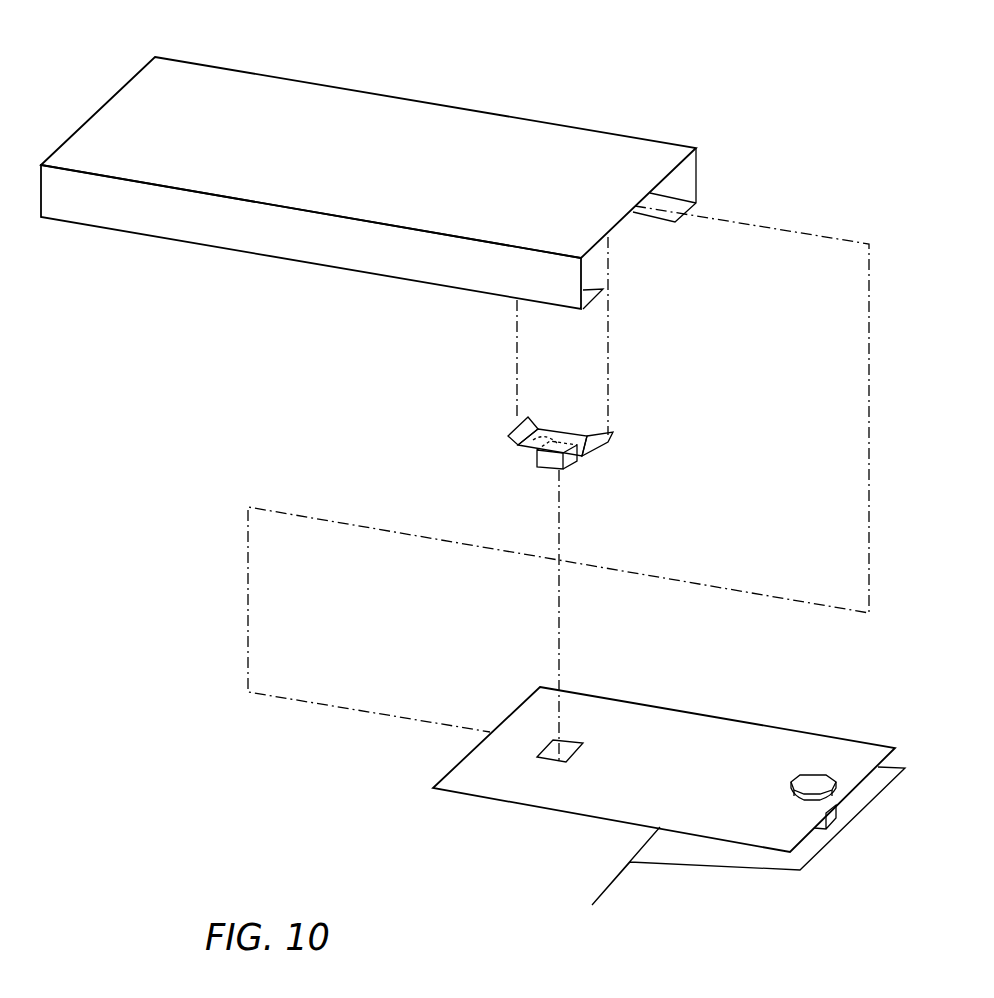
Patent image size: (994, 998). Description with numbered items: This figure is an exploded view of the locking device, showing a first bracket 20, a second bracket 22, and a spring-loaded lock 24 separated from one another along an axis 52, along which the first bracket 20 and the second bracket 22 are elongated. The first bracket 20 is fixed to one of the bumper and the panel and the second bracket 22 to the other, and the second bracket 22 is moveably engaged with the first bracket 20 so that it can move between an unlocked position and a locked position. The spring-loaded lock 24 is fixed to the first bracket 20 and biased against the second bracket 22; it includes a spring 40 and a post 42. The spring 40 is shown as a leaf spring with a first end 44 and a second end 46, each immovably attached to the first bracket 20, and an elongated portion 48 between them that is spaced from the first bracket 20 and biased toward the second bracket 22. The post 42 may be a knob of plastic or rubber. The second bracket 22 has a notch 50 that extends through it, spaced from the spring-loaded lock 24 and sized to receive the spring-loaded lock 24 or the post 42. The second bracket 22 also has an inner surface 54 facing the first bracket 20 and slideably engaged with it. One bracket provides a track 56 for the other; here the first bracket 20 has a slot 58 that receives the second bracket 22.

The first bracket 20 is at (420, 140).
The second bracket 22 is at (669, 785).
The spring-loaded lock 24 is at (572, 434).
The spring 40 is at (509, 451).
The post 42 is at (547, 469).
The first end 44 is at (572, 424).
The second end 46 is at (515, 428).
The elongated portion 48 is at (543, 440).
The notch 50 is at (552, 742).
The axis 52 is at (825, 236).
The inner surface 54 is at (725, 737).
The track 56 is at (700, 228).
The slot 58 is at (684, 178).